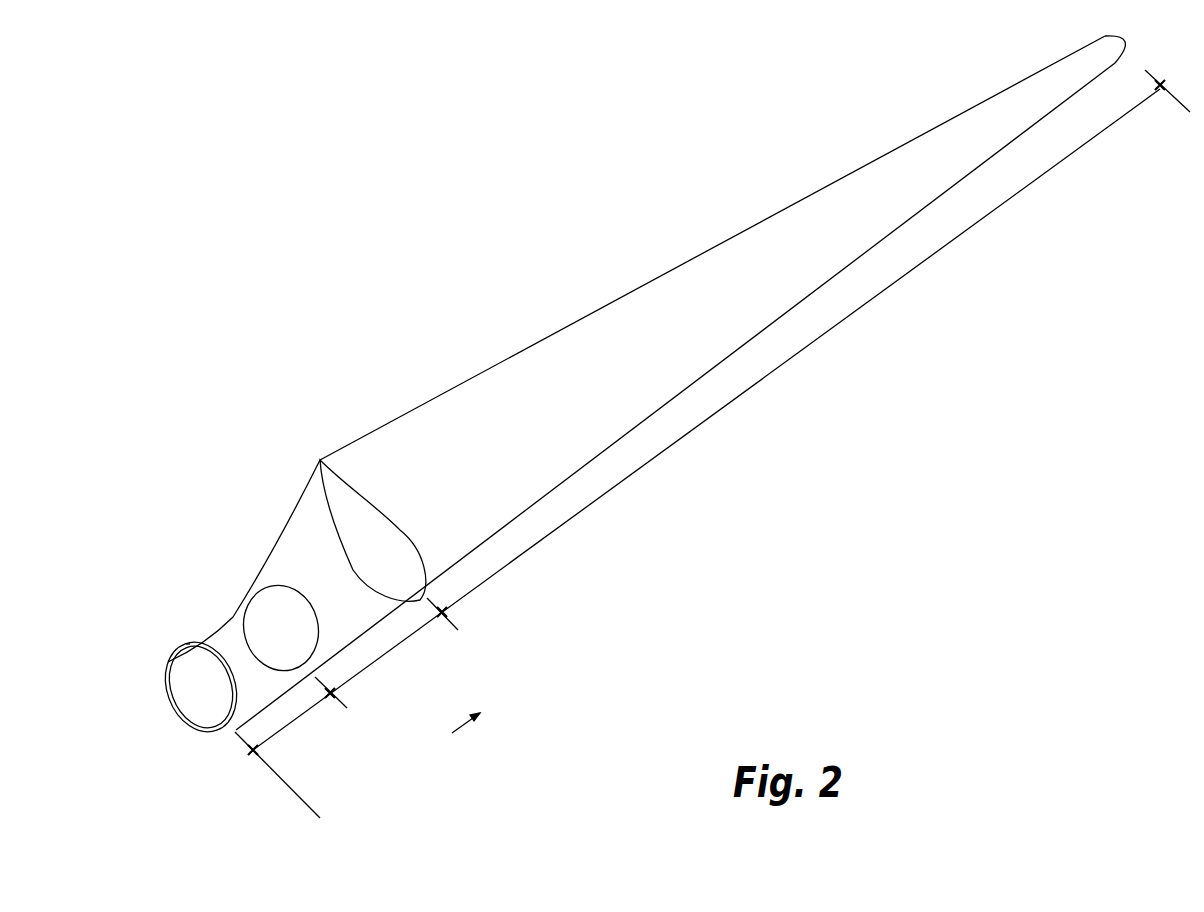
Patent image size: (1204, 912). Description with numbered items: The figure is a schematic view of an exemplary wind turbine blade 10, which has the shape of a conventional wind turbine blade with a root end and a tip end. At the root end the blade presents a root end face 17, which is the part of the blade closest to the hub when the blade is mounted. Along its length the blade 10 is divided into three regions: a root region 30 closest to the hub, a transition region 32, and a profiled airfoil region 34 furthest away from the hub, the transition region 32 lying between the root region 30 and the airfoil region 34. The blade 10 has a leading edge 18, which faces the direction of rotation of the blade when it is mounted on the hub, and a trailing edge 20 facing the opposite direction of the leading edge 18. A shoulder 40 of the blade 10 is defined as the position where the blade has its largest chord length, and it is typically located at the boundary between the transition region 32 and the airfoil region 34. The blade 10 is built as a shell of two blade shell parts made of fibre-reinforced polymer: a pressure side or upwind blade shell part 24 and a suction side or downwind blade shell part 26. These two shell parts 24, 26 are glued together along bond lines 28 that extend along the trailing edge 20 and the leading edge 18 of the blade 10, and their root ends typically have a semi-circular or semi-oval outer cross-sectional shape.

The wind turbine blade 10 is at (476, 256).
The root end face 17 is at (188, 675).
The leading edge 18 is at (833, 278).
The trailing edge 20 is at (707, 250).
The pressure side blade shell part 24 is at (190, 640).
The suction side blade shell part 26 is at (203, 730).
The bond lines 28 is at (190, 641).
The root region 30 is at (293, 721).
The transition region 32 is at (390, 648).
The airfoil region 34 is at (730, 402).
The shoulder 40 is at (320, 460).